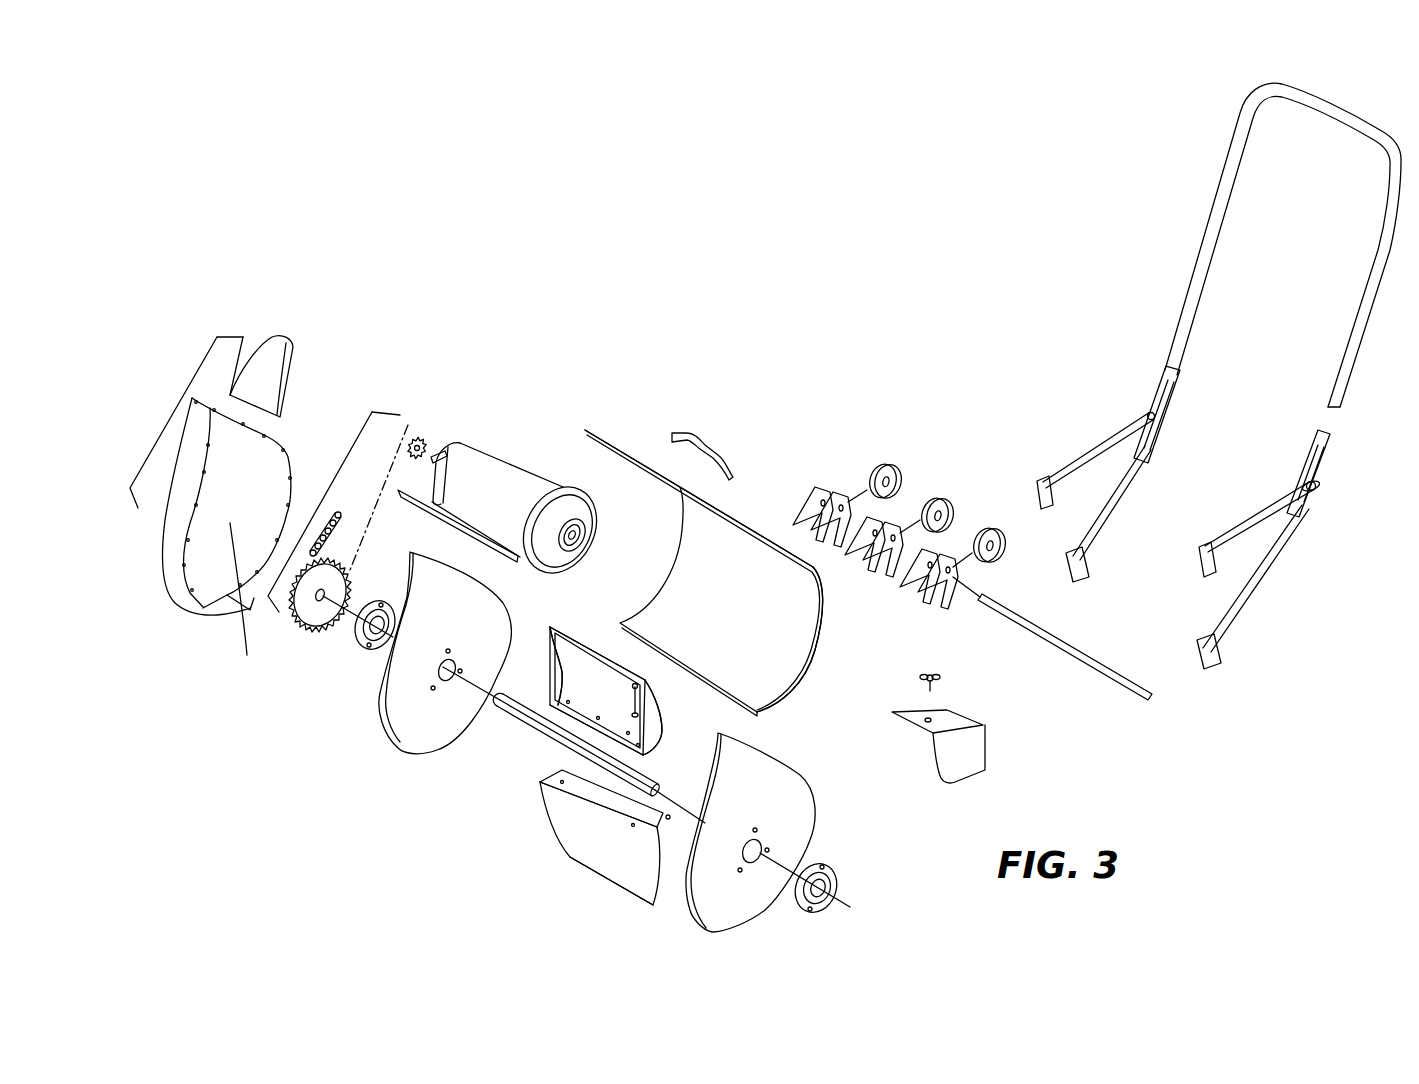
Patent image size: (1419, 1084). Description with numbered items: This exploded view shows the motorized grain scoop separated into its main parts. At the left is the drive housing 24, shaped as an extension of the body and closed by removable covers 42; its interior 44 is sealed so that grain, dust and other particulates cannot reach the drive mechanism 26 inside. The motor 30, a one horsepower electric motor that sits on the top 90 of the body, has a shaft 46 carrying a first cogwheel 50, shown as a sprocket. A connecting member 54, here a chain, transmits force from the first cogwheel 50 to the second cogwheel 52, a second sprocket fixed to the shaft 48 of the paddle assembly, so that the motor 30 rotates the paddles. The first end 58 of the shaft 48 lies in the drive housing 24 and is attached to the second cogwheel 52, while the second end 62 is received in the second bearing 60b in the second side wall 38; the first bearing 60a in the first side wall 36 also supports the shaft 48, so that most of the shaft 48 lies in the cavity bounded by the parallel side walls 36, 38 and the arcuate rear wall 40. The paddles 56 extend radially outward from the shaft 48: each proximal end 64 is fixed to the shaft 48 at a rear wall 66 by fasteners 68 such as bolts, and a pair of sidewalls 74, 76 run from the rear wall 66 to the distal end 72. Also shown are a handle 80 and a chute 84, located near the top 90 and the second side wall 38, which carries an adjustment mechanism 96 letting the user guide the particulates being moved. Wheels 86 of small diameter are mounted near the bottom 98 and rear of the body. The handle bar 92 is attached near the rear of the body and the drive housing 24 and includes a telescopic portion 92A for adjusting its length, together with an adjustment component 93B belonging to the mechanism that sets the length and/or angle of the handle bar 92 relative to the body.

The drive housing 24 is at (199, 367).
The removable cover 42 is at (295, 357).
The interior 44 is at (237, 613).
The drive mechanism 26 is at (333, 467).
The connecting member 54 is at (342, 535).
The second cogwheel 52 is at (307, 630).
The first bearing 60a is at (365, 648).
The first cogwheel 50 is at (423, 433).
The shaft 46 is at (438, 451).
The motor 30 is at (493, 440).
The first side wall 36 is at (386, 731).
The first end 58 is at (507, 713).
The shaft 48 is at (510, 712).
The rear wall 66 is at (577, 712).
The sidewall 74 is at (553, 672).
The distal end 72 is at (568, 637).
The fastener 68 is at (635, 686).
The sidewall 76 is at (650, 710).
The paddle 56 is at (660, 727).
The proximal end 64 is at (655, 753).
The second end 62 is at (652, 782).
The handle 80 is at (698, 428).
The top 90 is at (732, 513).
The rear wall 40 is at (823, 608).
The bottom 98 is at (807, 667).
The wheel 86 is at (880, 460).
The adjustment mechanism 96 is at (928, 718).
The chute 84 is at (985, 737).
The second side wall 38 is at (817, 830).
The second bearing 60b is at (836, 867).
The telescopic portion 92A is at (1202, 254).
The handle bar 92 is at (1165, 368).
The adjustment mechanism 93B is at (1318, 487).